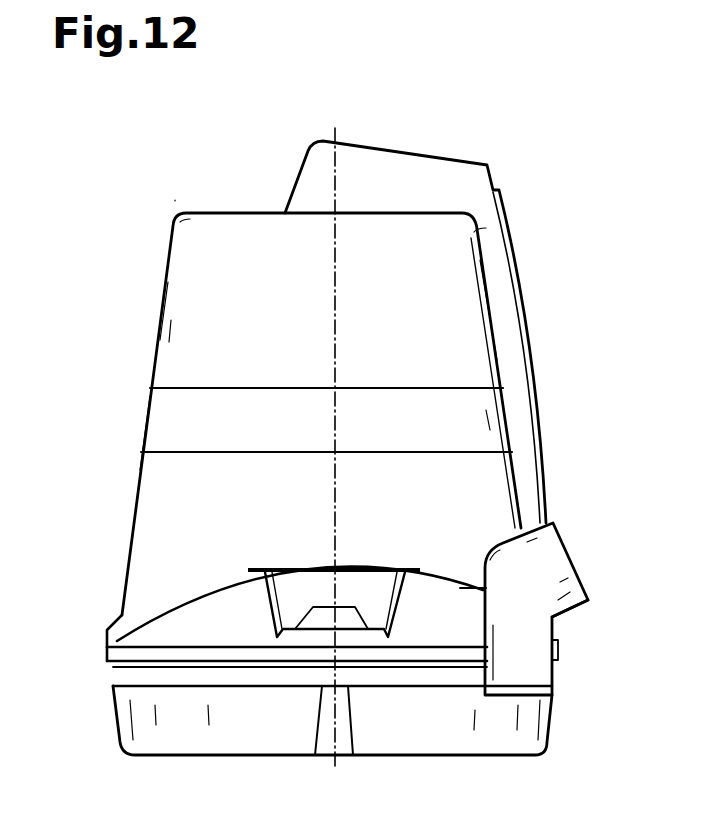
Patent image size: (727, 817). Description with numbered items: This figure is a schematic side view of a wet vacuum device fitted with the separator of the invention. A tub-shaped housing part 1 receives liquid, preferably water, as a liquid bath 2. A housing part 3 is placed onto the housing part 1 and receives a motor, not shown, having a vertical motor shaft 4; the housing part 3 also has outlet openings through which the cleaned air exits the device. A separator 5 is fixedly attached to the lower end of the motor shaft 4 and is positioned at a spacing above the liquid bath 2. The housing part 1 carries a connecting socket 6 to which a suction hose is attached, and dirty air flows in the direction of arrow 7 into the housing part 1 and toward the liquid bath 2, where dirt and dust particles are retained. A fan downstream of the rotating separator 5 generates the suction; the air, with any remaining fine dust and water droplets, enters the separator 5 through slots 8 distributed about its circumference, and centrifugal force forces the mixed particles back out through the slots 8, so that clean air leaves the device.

The housing part 1 is at (98, 658).
The liquid bath 2 is at (243, 740).
The housing part 3 is at (150, 319).
The motor shaft 4 is at (337, 533).
The separator 5 is at (290, 570).
The connecting socket 6 is at (585, 609).
The arrow 7 is at (585, 556).
The slots 8 is at (273, 598).